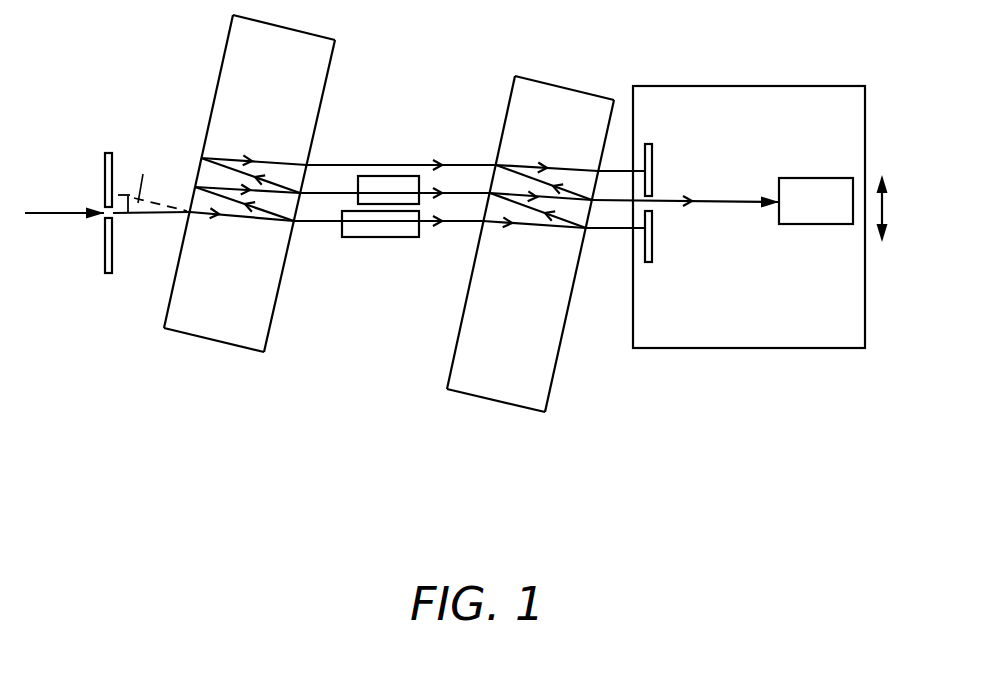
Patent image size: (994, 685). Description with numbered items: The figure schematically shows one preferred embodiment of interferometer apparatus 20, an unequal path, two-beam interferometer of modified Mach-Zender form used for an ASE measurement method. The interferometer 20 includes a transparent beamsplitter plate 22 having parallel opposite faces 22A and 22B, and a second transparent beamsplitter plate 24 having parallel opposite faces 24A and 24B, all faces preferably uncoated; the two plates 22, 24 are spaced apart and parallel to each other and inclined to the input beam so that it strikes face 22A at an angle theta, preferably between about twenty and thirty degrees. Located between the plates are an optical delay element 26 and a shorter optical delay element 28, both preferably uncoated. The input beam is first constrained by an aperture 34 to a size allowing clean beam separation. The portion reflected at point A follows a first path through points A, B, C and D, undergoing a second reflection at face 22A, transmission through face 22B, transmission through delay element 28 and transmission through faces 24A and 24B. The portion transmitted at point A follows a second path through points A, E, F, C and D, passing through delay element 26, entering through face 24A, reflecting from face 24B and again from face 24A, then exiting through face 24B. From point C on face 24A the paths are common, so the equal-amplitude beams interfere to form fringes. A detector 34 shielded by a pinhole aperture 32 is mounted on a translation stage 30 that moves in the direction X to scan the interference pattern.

The interferometer apparatus 20 is at (352, 475).
The beamsplitter plate 22 is at (187, 220).
The face of beamsplitter plate 22A is at (170, 300).
The face of beamsplitter plate 22B is at (271, 322).
The beamsplitter plate 24 is at (506, 285).
The face of beamsplitter plate 24A is at (456, 348).
The face of beamsplitter plate 24B is at (554, 373).
The optical delay element 26 is at (377, 232).
The optical delay element 28 is at (387, 178).
The translation stage 30 is at (749, 253).
The pinhole aperture 32 is at (651, 156).
The detector 34 is at (104, 174).